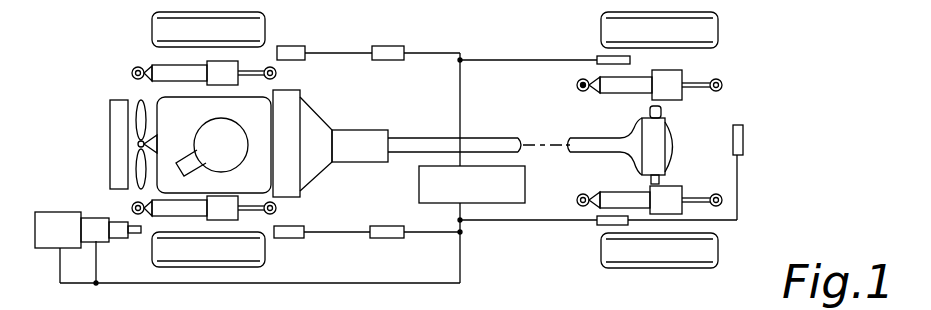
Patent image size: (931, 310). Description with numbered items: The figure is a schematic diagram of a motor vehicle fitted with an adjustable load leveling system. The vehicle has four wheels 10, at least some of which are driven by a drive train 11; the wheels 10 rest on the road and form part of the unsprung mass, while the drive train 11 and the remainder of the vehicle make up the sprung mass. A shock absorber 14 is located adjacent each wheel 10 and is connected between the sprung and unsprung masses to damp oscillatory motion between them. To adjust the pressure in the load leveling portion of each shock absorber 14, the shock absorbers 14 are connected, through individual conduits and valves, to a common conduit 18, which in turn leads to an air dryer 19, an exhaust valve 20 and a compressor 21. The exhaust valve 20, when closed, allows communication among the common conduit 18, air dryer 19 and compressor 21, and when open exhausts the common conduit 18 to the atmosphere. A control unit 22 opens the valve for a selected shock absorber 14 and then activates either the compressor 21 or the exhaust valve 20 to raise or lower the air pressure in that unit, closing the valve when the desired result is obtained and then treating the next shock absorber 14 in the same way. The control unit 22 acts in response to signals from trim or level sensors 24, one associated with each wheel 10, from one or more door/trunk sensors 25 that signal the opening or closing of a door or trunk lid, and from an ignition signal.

The wheels 10 is at (152, 28).
The drive train 11 is at (318, 133).
The shock absorber 14 is at (132, 75).
The common conduit 18 is at (137, 238).
The air dryer 19 is at (120, 228).
The exhaust valve 20 is at (90, 226).
The compressor 21 is at (52, 238).
The control unit 22 is at (418, 172).
The trim or level sensors 24 is at (293, 52).
The door/trunk sensors 25 is at (390, 52).